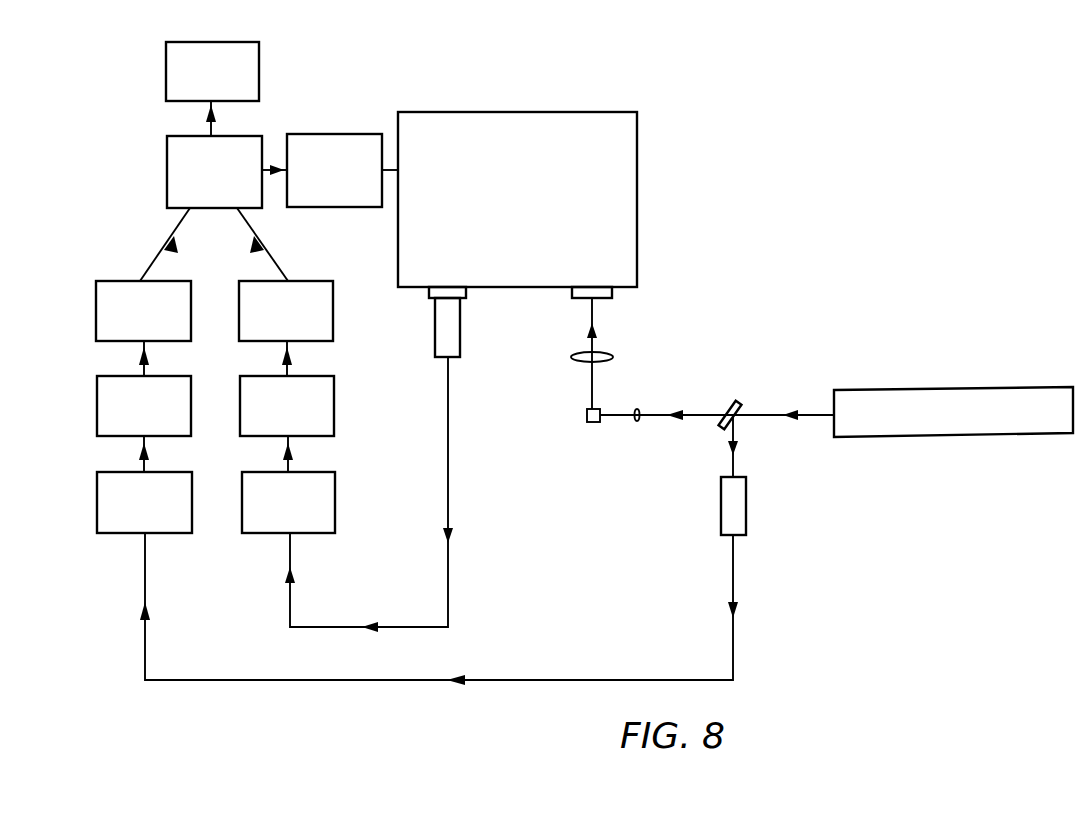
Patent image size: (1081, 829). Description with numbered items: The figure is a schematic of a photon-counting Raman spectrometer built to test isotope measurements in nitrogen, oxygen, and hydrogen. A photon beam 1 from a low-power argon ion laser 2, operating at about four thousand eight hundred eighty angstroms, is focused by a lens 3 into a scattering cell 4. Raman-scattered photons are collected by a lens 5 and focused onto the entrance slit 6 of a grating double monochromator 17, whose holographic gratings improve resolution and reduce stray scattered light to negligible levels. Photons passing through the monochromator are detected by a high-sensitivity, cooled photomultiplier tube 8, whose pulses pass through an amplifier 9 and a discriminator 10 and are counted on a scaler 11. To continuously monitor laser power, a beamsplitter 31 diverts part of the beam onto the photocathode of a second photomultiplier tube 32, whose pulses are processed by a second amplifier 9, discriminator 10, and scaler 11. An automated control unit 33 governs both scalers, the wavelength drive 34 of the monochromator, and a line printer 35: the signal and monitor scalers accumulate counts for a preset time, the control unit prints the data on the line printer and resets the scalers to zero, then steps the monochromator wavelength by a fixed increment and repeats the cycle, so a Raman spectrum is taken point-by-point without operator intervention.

The photon beam 1 is at (707, 418).
The argon ion laser 2 is at (1012, 435).
The lens 3 is at (634, 421).
The scattering cell 4 is at (586, 424).
The lens 5 is at (584, 360).
The entrance slit 6 is at (582, 298).
The photomultiplier tube 8 is at (460, 343).
The amplifier 9 is at (248, 533).
The discriminator 10 is at (248, 436).
The scaler 11 is at (245, 341).
The grating double monochromator 17 is at (637, 170).
The beamsplitter 31 is at (725, 407).
The photomultiplier tube 32 is at (746, 511).
The control unit 33 is at (167, 176).
The wavelength drive 34 is at (365, 134).
The line printer 35 is at (259, 79).